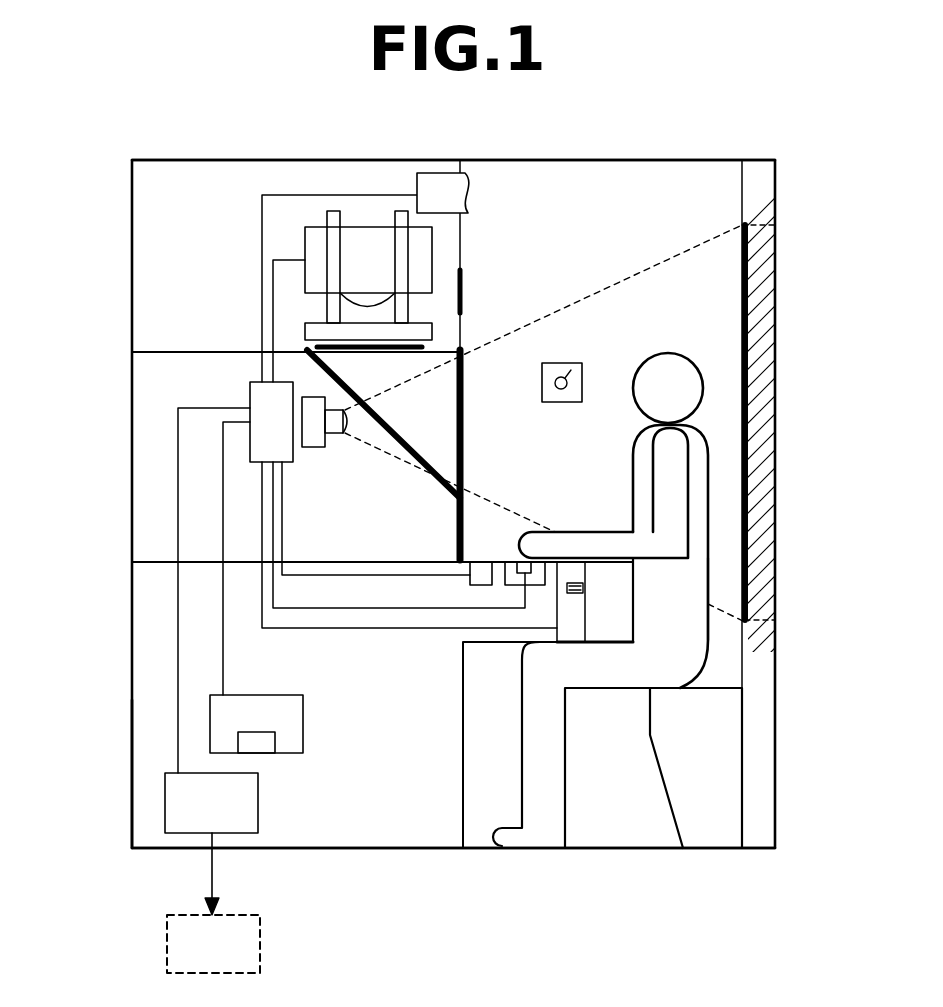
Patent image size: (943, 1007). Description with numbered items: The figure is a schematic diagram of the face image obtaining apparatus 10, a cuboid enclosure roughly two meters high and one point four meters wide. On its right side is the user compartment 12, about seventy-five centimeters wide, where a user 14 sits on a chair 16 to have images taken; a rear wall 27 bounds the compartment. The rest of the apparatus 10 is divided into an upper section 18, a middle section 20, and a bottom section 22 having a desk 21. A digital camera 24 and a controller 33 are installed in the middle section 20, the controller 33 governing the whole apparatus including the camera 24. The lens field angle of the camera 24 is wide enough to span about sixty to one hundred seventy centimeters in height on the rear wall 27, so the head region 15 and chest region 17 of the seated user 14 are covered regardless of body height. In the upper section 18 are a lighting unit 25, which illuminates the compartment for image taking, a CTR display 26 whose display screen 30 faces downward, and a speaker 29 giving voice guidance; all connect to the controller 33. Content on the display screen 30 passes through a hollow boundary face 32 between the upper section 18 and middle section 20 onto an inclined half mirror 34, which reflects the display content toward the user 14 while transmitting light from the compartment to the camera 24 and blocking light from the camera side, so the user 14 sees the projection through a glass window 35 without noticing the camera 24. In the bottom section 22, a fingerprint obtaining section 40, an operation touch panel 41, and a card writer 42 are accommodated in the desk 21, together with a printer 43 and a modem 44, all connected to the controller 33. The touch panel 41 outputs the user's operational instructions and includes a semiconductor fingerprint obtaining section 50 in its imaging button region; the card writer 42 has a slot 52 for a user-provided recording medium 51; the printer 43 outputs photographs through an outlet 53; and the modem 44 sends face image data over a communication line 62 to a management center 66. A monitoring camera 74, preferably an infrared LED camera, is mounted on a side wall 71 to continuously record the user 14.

The face image obtaining apparatus 10 is at (92, 130).
The user compartment 12 is at (641, 850).
The user 14 is at (620, 604).
The head region 15 is at (672, 352).
The chair 16 is at (650, 733).
The chest region 17 is at (625, 428).
The upper section 18 is at (150, 278).
The middle section 20 is at (150, 380).
The desk 21 is at (472, 655).
The bottom section 22 is at (150, 608).
The digital camera 24 is at (313, 450).
The lighting unit 25 is at (465, 292).
The CTR display 26 is at (370, 297).
The rear wall 27 is at (749, 302).
The speaker 29 is at (470, 188).
The display screen 30 is at (325, 218).
The hollow boundary face 32 is at (330, 345).
The controller 33 is at (258, 382).
The half mirror 34 is at (440, 478).
The glass window 35 is at (465, 433).
The fingerprint obtaining section 40 is at (480, 578).
The operation touch panel 41 is at (509, 562).
The card writer 42 is at (590, 620).
The printer 43 is at (303, 713).
The modem 44 is at (258, 790).
The semiconductor fingerprint obtaining section 50 is at (524, 578).
The recording medium 51 is at (575, 595).
The slot 52 is at (633, 566).
The outlet 53 is at (275, 740).
The communication line 62 is at (197, 874).
The management center 66 is at (262, 935).
The side wall 71 is at (616, 175).
The monitoring camera 74 is at (573, 369).